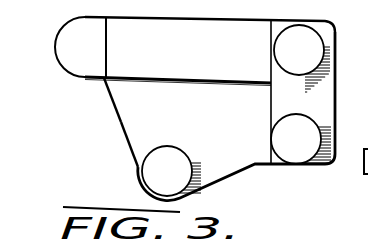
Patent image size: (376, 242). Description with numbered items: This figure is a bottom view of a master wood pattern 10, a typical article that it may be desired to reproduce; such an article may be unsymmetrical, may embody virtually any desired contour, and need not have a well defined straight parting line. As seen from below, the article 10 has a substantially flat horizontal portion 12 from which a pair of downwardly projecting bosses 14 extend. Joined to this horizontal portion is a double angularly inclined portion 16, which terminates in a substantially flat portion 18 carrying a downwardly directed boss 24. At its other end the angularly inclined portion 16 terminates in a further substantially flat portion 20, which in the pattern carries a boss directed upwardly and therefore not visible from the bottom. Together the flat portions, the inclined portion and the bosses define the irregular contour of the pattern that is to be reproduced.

The master wood pattern 10 is at (335, 80).
The substantially flat horizontal portion 12 is at (330, 110).
The downwardly projecting bosses 14 is at (315, 43).
The double angularly inclined portion 16 is at (125, 108).
The substantially flat portion 18 is at (135, 138).
The substantially flat portion 20 is at (75, 57).
The downwardly directed boss 24 is at (152, 163).